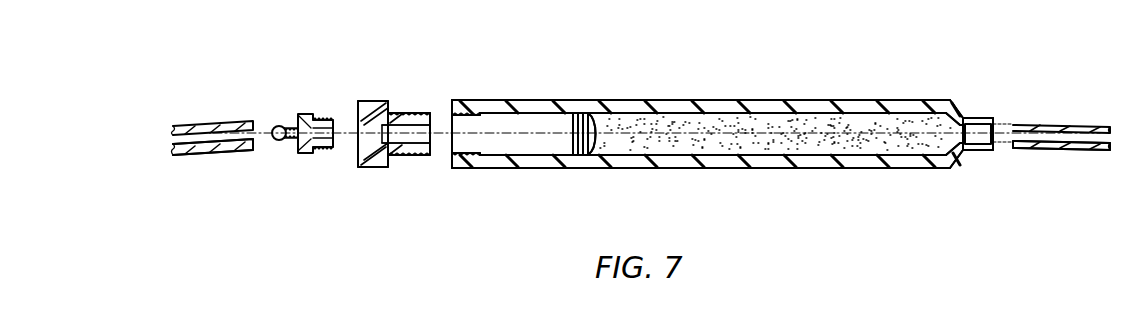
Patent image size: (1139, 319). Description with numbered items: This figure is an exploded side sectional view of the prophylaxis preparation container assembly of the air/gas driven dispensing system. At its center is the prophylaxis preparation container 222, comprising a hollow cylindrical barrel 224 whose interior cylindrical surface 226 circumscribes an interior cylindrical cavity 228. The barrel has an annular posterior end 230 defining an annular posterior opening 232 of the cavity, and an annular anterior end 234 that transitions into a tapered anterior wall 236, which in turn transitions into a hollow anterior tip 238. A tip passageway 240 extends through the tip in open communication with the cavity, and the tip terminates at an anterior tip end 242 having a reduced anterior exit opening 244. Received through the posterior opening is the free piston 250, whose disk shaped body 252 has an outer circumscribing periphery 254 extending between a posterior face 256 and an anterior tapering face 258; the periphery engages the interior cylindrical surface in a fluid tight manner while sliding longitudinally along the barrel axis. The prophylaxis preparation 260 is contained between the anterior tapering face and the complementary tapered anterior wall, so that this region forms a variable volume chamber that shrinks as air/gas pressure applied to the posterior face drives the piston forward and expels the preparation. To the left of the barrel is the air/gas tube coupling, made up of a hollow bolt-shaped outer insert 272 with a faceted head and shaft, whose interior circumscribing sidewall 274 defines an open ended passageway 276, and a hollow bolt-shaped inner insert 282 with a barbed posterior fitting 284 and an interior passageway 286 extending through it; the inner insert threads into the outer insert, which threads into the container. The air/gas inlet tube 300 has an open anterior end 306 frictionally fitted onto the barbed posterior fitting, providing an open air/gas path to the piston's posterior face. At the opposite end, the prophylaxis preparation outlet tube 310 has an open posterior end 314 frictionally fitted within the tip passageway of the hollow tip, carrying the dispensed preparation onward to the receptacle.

The prophylaxis preparation container 222 is at (711, 90).
The hollow cylindrical barrel 224 is at (657, 107).
The interior cylindrical surface 226 is at (522, 150).
The interior cylindrical cavity 228 is at (497, 123).
The annular posterior end 230 is at (450, 146).
The annular posterior opening 232 is at (403, 152).
The annular anterior end 234 is at (949, 166).
The tapered anterior wall 236 is at (960, 102).
The hollow anterior tip 238 is at (992, 118).
The tip passageway 240 is at (974, 120).
The anterior tip end 242 is at (991, 151).
The anterior exit opening 244 is at (1000, 126).
The free piston 250 is at (559, 122).
The disk shaped body 252 is at (578, 112).
The outer circumscribing periphery 254 is at (603, 150).
The posterior face 256 is at (575, 157).
The anterior tapering face 258 is at (600, 140).
The prophylaxis preparation 260 is at (757, 120).
The hollow bolt-shaped outer insert 272 is at (369, 96).
The interior circumscribing sidewall 274 is at (412, 129).
The open ended passageway 276 is at (387, 160).
The hollow bolt-shaped inner insert 282 is at (312, 110).
The barbed posterior fitting 284 is at (282, 127).
The interior passageway 286 is at (290, 136).
The air/gas inlet tube 300 is at (215, 122).
The open anterior end 306 is at (258, 146).
The prophylaxis preparation outlet tube 310 is at (1086, 125).
The open posterior end 314 is at (1014, 143).